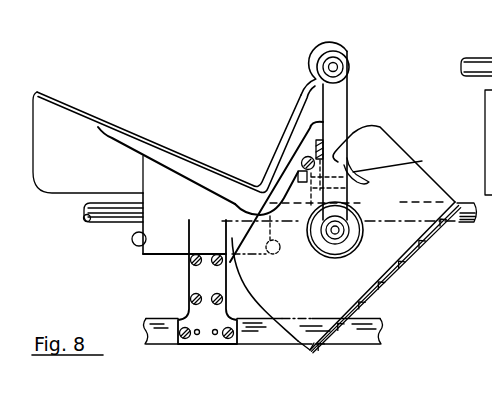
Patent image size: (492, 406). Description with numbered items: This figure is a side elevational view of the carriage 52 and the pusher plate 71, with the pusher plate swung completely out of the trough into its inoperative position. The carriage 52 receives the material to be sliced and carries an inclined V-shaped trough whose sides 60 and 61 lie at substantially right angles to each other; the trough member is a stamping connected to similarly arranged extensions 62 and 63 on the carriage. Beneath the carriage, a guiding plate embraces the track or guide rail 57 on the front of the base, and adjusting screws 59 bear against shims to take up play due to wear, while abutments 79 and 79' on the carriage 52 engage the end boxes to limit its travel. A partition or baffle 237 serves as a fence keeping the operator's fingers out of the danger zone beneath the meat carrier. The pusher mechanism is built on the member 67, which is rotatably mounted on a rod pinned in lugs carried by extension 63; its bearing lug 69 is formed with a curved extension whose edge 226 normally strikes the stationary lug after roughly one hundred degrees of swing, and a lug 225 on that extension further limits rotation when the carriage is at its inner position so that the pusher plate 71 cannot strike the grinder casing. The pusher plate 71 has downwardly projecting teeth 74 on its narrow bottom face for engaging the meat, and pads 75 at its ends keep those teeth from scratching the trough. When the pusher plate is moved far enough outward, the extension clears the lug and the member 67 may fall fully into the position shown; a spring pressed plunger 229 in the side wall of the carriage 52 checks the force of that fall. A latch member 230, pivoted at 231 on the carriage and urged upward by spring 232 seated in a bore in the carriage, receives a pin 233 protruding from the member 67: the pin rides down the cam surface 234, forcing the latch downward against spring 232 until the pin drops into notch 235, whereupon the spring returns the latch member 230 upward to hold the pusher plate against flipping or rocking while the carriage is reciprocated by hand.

The trough side 60 is at (122, 128).
The trough side 61 is at (299, 107).
The carriage extension 62 is at (190, 172).
The carriage extension 63 is at (288, 154).
The spring 232 is at (269, 188).
The latch pivot 231 is at (303, 183).
The edge of curved extension 226 is at (322, 51).
The lug 225 is at (349, 59).
The member 67 is at (341, 97).
The spring pressed plunger 229 is at (324, 140).
The pin 233 is at (380, 127).
The cam surface 234 is at (417, 161).
The latch member 230 is at (369, 181).
The notch 235 is at (349, 191).
The downwardly projecting teeth 74 is at (400, 261).
The pads 75 is at (311, 351).
The pusher plate 71 is at (290, 327).
The track or guide rail 57 is at (160, 336).
The adjusting screws 59 is at (215, 338).
The carriage 52 is at (156, 250).
The abutment 79 is at (117, 238).
The abutment 79' is at (256, 253).
The partition or baffle 237 is at (59, 186).
The bearing lug 69 is at (487, 56).